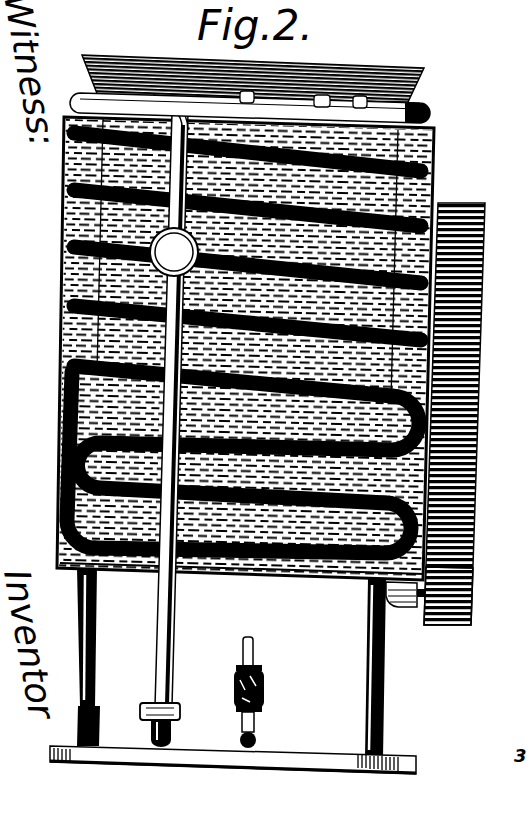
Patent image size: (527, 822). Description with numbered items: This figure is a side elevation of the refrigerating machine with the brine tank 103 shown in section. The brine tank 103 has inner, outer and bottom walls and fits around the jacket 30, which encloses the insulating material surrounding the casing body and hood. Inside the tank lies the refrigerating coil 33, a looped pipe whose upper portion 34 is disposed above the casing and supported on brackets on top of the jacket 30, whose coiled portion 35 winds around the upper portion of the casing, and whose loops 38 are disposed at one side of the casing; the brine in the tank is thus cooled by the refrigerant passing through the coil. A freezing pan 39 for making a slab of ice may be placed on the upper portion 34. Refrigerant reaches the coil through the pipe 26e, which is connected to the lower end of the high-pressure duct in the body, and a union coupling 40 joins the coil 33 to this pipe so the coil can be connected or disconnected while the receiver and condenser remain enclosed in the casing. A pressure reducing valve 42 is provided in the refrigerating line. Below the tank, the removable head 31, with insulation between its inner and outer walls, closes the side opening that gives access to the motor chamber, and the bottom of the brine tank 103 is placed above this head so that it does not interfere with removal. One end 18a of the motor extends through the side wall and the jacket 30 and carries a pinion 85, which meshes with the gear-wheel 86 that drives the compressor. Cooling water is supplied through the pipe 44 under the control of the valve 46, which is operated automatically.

The brine tank 103 is at (437, 185).
The freezing pan 39 is at (341, 71).
The upper portion of the refrigerating coil 34 is at (429, 109).
The pressure reducing valve 42 is at (174, 400).
The coiled portion of the refrigerating coil 35 is at (247, 264).
The loops of the refrigerating coil 38 is at (248, 474).
The refrigerating coil 33 is at (63, 366).
The gear-wheel 86 is at (469, 478).
The pinion 85 is at (459, 620).
The end of the motor 18a is at (388, 610).
The jacket 30 is at (386, 669).
The removable head 31 is at (78, 638).
The union coupling 40 is at (148, 705).
The pipe 26e is at (150, 739).
The valve 46 is at (263, 690).
The pipe 44 is at (259, 730).